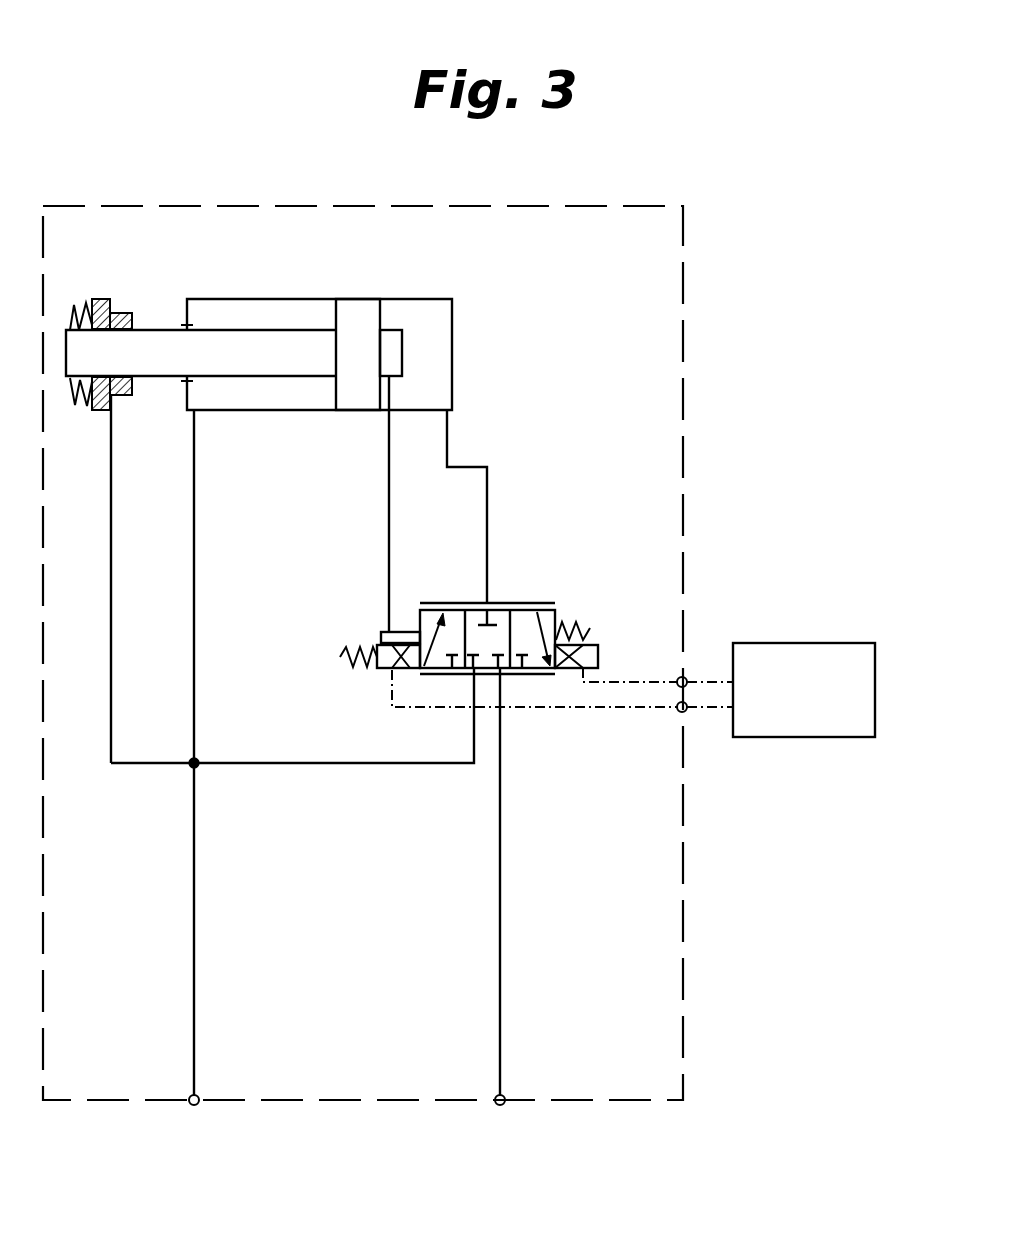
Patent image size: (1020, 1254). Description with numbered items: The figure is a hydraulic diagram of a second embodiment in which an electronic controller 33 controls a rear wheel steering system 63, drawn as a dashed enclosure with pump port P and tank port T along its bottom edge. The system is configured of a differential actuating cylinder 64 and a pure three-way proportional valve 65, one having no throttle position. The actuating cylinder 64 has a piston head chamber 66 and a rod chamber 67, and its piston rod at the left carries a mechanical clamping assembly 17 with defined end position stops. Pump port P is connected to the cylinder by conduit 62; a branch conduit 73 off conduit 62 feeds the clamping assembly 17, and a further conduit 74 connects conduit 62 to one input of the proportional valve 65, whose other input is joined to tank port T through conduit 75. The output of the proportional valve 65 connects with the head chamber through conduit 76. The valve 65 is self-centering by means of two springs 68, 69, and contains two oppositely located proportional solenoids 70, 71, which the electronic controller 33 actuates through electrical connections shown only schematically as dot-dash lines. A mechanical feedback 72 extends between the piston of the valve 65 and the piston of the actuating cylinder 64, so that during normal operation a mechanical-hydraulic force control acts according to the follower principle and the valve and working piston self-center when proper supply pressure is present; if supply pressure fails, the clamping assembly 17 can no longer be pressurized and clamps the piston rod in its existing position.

The clamping assembly 17 is at (82, 412).
The electronic controller 33 is at (806, 648).
The conduit 62 is at (195, 920).
The rear wheel steering system 63 is at (686, 930).
The differential actuating cylinder 64 is at (289, 349).
The three-way proportional valve 65 is at (537, 604).
The piston head chamber 66 is at (250, 410).
The rod chamber 67 is at (452, 340).
The spring 68 is at (340, 655).
The spring 69 is at (590, 628).
The proportional solenoid 70 is at (377, 670).
The proportional solenoid 71 is at (598, 655).
The mechanical feedback 72 is at (389, 503).
The branch conduit 73 is at (112, 668).
The conduit 74 is at (297, 763).
The conduit 75 is at (501, 907).
The conduit 76 is at (468, 467).